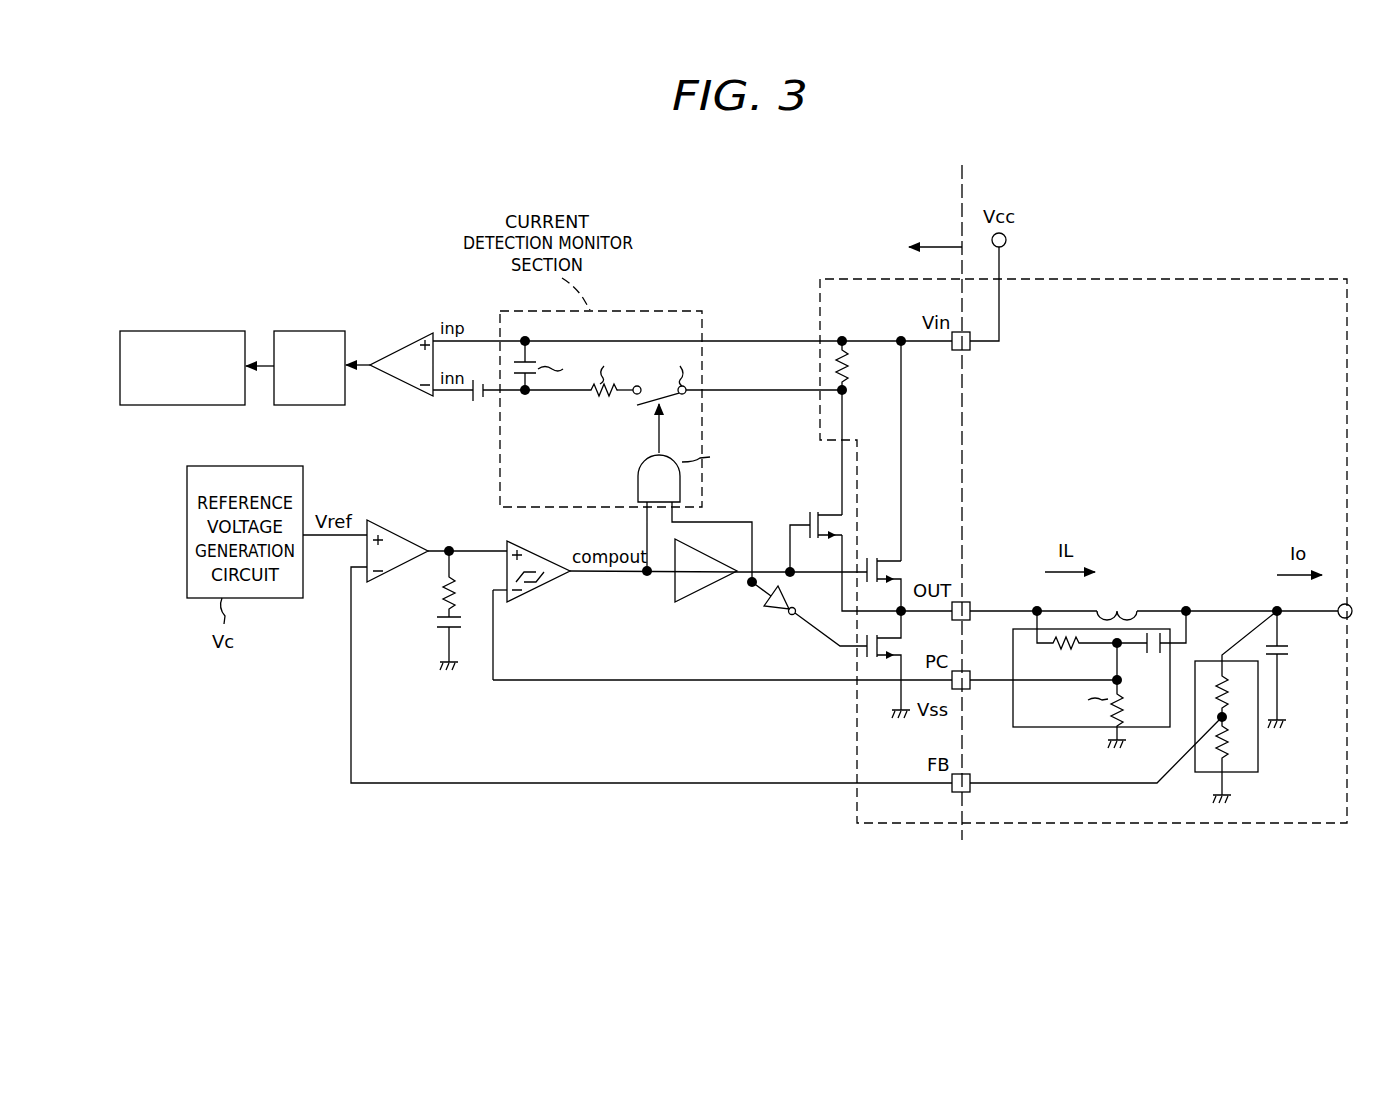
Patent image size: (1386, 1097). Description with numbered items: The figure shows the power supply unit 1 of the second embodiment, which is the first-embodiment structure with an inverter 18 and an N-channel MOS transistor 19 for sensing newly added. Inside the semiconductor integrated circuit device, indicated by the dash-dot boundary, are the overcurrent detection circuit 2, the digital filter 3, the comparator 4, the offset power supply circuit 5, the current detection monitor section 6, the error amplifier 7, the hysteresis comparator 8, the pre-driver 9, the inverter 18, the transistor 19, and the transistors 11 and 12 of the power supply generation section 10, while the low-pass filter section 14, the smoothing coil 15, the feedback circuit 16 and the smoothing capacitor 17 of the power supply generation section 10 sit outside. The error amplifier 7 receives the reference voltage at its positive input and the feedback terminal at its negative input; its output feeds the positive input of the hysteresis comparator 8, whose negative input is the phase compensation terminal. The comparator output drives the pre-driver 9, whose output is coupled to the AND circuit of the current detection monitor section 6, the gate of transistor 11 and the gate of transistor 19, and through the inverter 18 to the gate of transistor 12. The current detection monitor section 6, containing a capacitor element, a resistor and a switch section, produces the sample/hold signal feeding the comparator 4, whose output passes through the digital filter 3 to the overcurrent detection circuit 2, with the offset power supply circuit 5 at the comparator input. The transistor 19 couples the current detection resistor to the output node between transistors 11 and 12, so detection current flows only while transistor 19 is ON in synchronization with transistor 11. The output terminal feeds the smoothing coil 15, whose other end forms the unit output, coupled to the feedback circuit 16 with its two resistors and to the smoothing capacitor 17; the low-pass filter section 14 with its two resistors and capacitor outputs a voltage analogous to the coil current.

The power supply unit 1 is at (1193, 247).
The overcurrent detection circuit 2 is at (209, 331).
The digital filter 3 is at (327, 331).
The comparator 4 is at (393, 348).
The offset power supply circuit 5 is at (479, 402).
The current detection monitor section 6 is at (690, 311).
The error amplifier 7 is at (390, 520).
The hysteresis comparator 8 is at (547, 598).
The pre-driver 9 is at (704, 598).
The power supply generation section 10 is at (1266, 279).
The transistor 11 is at (886, 556).
The transistor 12 is at (885, 661).
The low-pass filter section 14 is at (1033, 727).
The smoothing coil 15 is at (1127, 606).
The feedback circuit 16 is at (1258, 766).
The smoothing capacitor 17 is at (1290, 650).
The inverter 18 is at (779, 610).
The transistor for sensing 19 is at (806, 520).